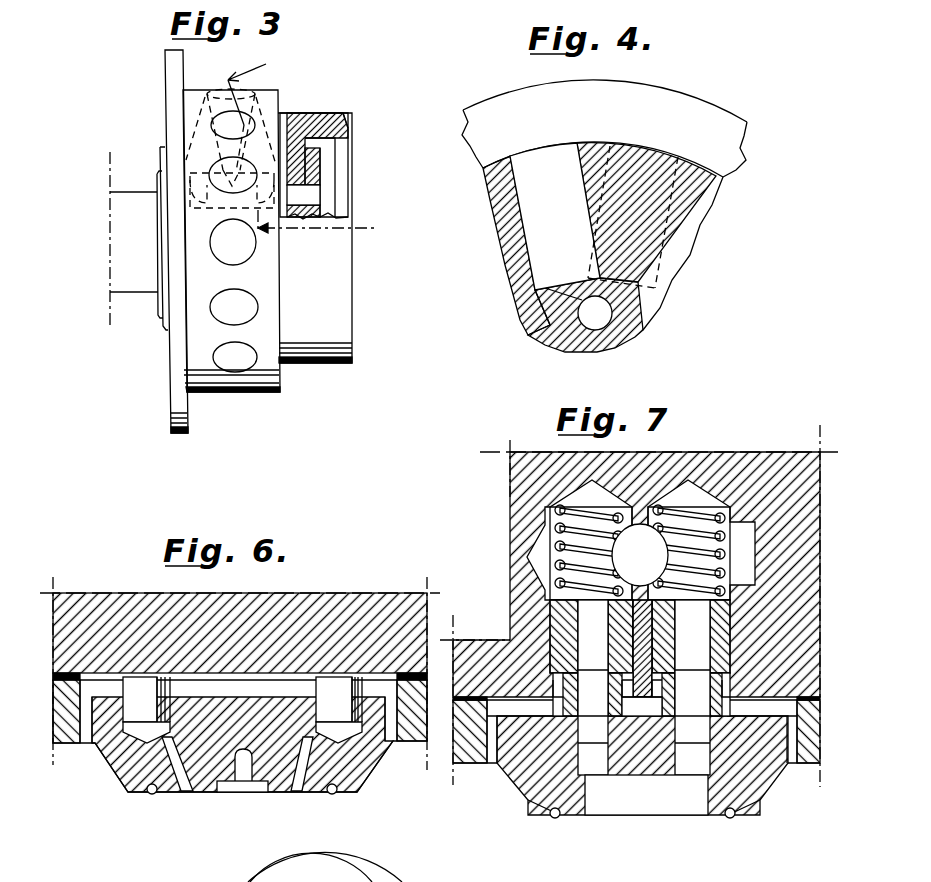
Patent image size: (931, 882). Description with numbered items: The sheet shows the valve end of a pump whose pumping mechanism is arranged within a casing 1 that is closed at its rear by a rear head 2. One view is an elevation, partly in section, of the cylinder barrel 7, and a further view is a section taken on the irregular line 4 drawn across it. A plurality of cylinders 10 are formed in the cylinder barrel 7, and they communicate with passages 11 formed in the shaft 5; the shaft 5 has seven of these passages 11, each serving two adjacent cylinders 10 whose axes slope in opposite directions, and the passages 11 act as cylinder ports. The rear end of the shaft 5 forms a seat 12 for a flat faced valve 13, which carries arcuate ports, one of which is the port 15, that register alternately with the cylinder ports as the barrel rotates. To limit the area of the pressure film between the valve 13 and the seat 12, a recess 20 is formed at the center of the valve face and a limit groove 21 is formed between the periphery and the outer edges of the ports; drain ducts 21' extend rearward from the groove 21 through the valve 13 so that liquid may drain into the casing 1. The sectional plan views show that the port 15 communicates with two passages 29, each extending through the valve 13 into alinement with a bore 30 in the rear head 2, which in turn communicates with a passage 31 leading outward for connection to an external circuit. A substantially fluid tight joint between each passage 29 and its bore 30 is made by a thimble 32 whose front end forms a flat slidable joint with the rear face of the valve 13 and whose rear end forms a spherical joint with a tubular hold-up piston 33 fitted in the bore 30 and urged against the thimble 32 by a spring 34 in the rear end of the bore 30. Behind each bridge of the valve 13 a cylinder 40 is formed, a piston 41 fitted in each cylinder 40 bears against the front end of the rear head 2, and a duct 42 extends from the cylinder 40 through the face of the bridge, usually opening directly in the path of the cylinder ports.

In FIG. 6, the casing 1 is at (404, 740).
In FIG. 7, the casing 1 is at (462, 762).
In FIG. 6, the rear head 2 is at (108, 605).
In FIG. 7, the rear head 2 is at (518, 481).
In FIG. 3, the section line 4— 4 is at (309, 149).
In FIG. 3, the shaft 5 is at (138, 198).
In FIG. 3, the cylinder barrel 7 is at (302, 68).
In FIG. 4, the cylinder barrel 7 is at (518, 248).
In FIG. 3, the cylinders 10 is at (186, 140).
In FIG. 4, the cylinders 10 is at (540, 158).
In FIG. 3, the passages 11 is at (300, 200).
In FIG. 4, the passages 11 is at (595, 313).
In FIG. 3, the seat 12 is at (331, 172).
In FIG. 6, the valve 13 is at (350, 768).
In FIG. 7, the valve 13 is at (510, 767).
In FIG. 7, the port 15 is at (652, 806).
In FIG. 6, the recess 20 is at (232, 795).
In FIG. 6, the limit groove 21 is at (242, 804).
In FIG. 7, the limit groove 21 is at (642, 828).
In FIG. 7, the drain ducts 21' is at (645, 832).
In FIG. 7, the passages 29 is at (644, 757).
In FIG. 7, the bore 30 is at (641, 540).
In FIG. 7, the passage 31 is at (640, 535).
In FIG. 7, the thimble 32 is at (644, 727).
In FIG. 7, the hold-up piston 33 is at (640, 658).
In FIG. 7, the spring 34 is at (688, 606).
In FIG. 6, the cylinder 40 is at (168, 729).
In FIG. 6, the piston 41 is at (242, 699).
In FIG. 6, the duct 42 is at (304, 812).